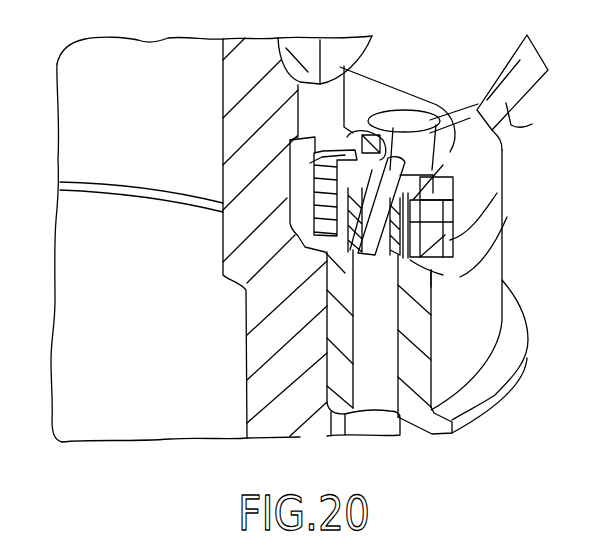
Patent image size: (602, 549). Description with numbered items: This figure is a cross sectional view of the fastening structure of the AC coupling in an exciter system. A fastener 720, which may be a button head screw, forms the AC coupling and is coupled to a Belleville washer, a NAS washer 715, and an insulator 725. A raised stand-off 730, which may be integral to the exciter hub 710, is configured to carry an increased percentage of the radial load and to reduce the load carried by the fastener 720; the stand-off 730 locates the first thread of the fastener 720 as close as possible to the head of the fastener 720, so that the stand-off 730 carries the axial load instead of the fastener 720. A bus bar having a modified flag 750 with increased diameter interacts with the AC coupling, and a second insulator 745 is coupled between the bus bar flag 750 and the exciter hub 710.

The exciter hub 710 is at (436, 125).
The NAS washer 715 is at (430, 160).
The fastener 720 is at (393, 128).
The insulator 725 is at (440, 175).
The stand-off 730 is at (433, 275).
The insulator 745 is at (450, 240).
The bus bar flag 750 is at (450, 208).